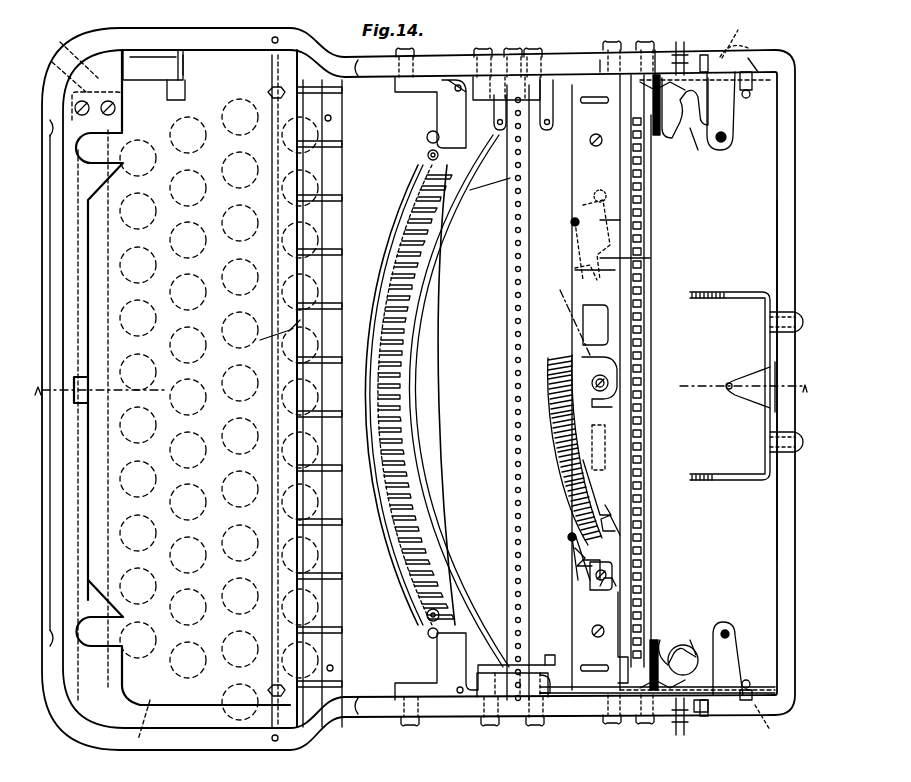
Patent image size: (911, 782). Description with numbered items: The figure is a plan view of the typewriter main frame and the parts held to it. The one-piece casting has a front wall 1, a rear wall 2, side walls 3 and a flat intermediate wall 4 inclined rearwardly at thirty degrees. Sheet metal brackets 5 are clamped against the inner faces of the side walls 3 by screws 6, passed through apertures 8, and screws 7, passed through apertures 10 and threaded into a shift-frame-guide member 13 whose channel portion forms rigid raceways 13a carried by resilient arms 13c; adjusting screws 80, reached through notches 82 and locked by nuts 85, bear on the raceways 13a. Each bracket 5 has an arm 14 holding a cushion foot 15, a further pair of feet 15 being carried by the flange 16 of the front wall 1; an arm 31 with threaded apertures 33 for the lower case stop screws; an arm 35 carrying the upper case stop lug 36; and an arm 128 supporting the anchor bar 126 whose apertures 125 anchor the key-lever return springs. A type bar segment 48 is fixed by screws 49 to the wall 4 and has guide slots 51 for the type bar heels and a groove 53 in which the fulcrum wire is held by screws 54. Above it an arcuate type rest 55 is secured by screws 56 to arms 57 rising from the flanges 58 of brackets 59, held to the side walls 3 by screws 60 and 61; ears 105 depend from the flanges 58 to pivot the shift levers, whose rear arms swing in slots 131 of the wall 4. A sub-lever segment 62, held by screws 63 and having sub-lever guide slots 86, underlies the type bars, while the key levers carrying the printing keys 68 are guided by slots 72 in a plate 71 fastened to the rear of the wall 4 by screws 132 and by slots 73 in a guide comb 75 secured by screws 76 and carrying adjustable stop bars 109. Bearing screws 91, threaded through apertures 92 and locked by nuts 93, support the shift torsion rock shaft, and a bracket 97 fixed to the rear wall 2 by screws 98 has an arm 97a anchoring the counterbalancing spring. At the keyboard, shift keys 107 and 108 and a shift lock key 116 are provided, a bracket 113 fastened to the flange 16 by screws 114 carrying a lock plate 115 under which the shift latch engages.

The front wall 1 is at (44, 232).
The rear wall 2 is at (782, 560).
The side walls 3 is at (220, 32).
The intermediate wall 4 is at (625, 258).
The sheet metal brackets 5 is at (655, 48).
The clamping screw 6 is at (704, 55).
The clamping screws 7 is at (630, 46).
The aperture 8 is at (730, 33).
The apertures 10 is at (615, 722).
The shift-frame-guide member 13 is at (610, 110).
The raceways 13a is at (700, 120).
The resilient arm 13c is at (668, 135).
The arm 14 is at (698, 152).
The cushion foot 15 is at (424, 381).
The flange 16 is at (78, 242).
The arm 31 is at (730, 110).
The screw threaded apertures 33 is at (724, 140).
The arm 35 is at (625, 90).
The upper case stop lug 36 is at (656, 135).
The type bar segment 48 is at (572, 262).
The screws 49 is at (590, 200).
The guide slots 51 is at (568, 505).
The groove 53 is at (620, 222).
The screws 54 is at (572, 226).
The type rest 55 is at (413, 590).
The screws 56 is at (426, 137).
The arms 57 is at (445, 100).
The flanges 58 is at (548, 80).
The brackets 59 is at (555, 680).
The screws 60 is at (488, 724).
The screws 61 is at (528, 48).
The sub-lever segment 62 is at (425, 278).
The screws 63 is at (415, 50).
The printing keys 68 is at (178, 128).
The plate 71 is at (622, 403).
The slots 72 is at (640, 330).
The slots 73 is at (342, 230).
The guide comb 75 is at (270, 345).
The screws 76 is at (276, 38).
The adjusting screws 80 is at (678, 42).
The notch 82 is at (715, 60).
The lock nuts 85 is at (710, 712).
The sub-lever guide slots 86 is at (400, 332).
The bearing screws 91 is at (755, 386).
The threaded apertures 92 is at (762, 715).
The lock nuts 93 is at (760, 68).
The bracket 97 is at (768, 428).
The arm 97a is at (748, 378).
The screws 98 is at (770, 315).
The ears 105 is at (505, 120).
The shift key 107 is at (57, 67).
The shift key 108 is at (150, 740).
The strip or bar 109 is at (268, 92).
The bracket 113 is at (69, 49).
The screws 114 is at (116, 108).
The lock plate 115 is at (150, 60).
The shift lock key 116 is at (179, 54).
The apertures 125 is at (510, 166).
The anchor bar 126 is at (520, 232).
The arms 128 is at (600, 48).
The slots 131 is at (590, 110).
The fastening screws 132 is at (605, 140).